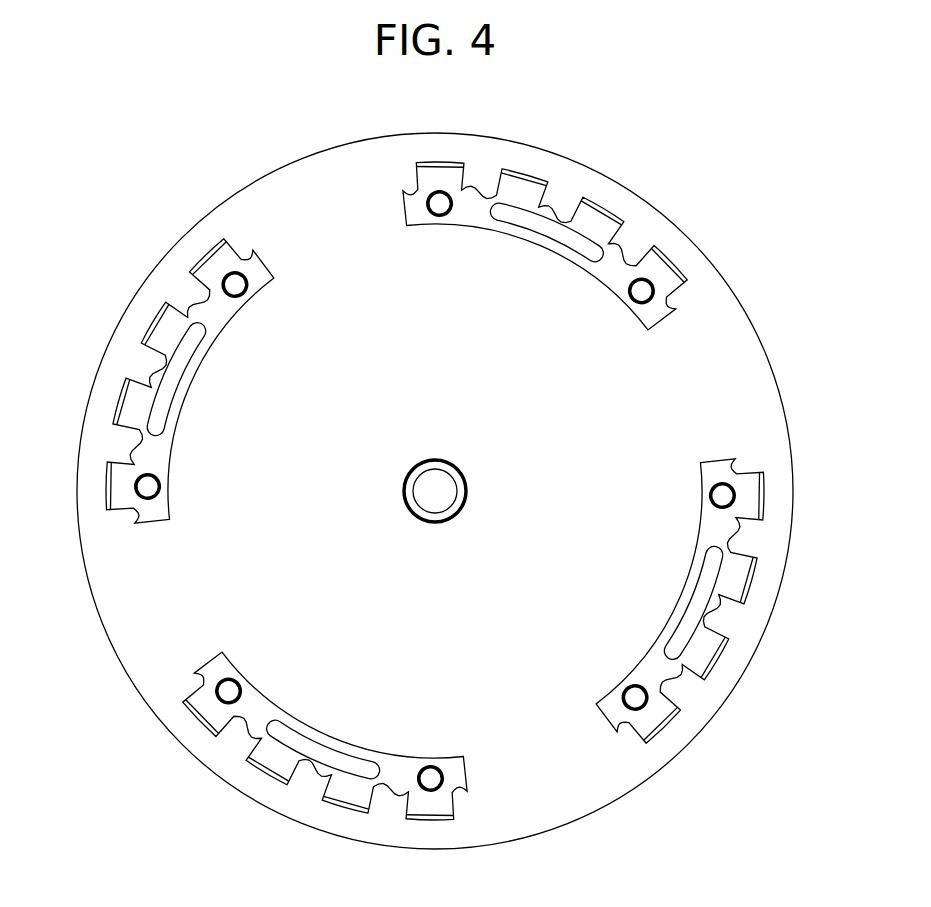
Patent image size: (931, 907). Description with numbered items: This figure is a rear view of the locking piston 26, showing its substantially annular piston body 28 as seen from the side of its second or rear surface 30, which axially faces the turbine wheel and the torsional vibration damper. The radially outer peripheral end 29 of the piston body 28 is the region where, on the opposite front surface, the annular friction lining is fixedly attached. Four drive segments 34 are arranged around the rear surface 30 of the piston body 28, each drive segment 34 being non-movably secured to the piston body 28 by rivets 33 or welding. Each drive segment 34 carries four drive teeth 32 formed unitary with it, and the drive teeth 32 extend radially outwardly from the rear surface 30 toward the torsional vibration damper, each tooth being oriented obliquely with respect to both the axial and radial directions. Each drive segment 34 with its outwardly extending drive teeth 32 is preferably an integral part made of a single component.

The locking piston 26 is at (300, 148).
The piston body 28 is at (585, 792).
The radially outer peripheral end 29 is at (130, 613).
The rear surface 30 is at (720, 370).
The drive teeth 32 is at (528, 185).
The rivets 33 is at (238, 288).
The drive segments 34 is at (610, 275).